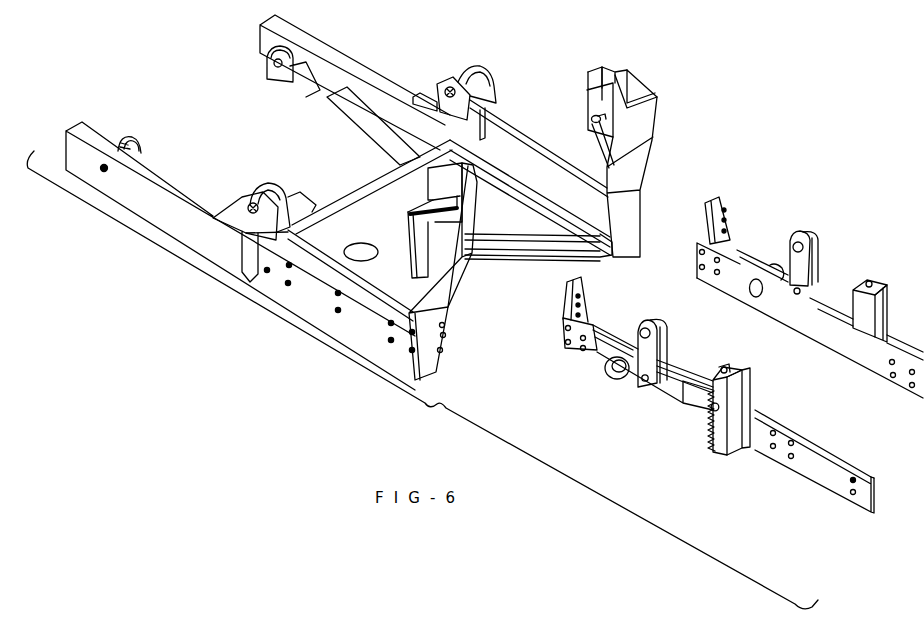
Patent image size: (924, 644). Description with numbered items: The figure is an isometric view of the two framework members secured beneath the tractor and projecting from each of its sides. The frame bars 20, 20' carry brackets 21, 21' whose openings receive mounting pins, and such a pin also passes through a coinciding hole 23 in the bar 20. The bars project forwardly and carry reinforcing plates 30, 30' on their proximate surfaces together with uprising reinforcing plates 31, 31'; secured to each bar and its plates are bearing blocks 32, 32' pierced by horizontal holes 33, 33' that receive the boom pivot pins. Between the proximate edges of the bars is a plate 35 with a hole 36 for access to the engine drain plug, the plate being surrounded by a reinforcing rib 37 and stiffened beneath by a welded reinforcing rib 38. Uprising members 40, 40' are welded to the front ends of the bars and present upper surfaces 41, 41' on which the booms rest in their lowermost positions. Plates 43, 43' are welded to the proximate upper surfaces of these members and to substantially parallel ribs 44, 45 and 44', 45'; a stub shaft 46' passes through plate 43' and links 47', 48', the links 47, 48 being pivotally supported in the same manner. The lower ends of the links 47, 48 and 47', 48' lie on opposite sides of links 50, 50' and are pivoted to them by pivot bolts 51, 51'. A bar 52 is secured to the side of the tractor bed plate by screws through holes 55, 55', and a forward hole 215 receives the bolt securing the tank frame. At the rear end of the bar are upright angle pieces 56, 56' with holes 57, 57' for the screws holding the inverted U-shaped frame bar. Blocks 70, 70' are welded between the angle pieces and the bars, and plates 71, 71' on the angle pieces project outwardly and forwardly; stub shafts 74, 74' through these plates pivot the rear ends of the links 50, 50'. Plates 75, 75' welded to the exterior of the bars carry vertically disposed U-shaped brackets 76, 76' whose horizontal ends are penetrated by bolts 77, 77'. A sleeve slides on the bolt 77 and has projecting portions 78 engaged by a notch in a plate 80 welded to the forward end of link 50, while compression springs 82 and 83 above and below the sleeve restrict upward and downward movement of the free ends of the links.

The frame bar 20 is at (240, 256).
The frame bar 20' is at (355, 82).
The bracket 21 is at (146, 142).
The bracket 21' is at (270, 71).
The hole 23 is at (107, 171).
The reinforcing plate 30 is at (257, 202).
The reinforcing plate 30' is at (366, 126).
The uprising reinforcing plate 31 is at (350, 274).
The uprising reinforcing plate 31' is at (530, 177).
The bearing block 32 is at (284, 201).
The bearing block 32' is at (488, 80).
The hole 33 is at (245, 237).
The hole 33' is at (449, 102).
The plate 35 is at (370, 193).
The hole 36 is at (372, 246).
The reinforcing rib 37 is at (519, 233).
The reinforcing rib 38 is at (537, 258).
The uprising member 40 is at (445, 271).
The uprising member 40' is at (639, 177).
The surface 41 is at (405, 237).
The surface 41' is at (644, 85).
The plate 43 is at (478, 236).
The plate 43' is at (583, 104).
The rib 44 is at (434, 188).
The rib 44' is at (590, 64).
The rib 45 is at (463, 192).
The rib 45' is at (625, 72).
The stub shaft 46' is at (584, 141).
The link 47 is at (637, 346).
The link 47' is at (793, 249).
The link 48 is at (662, 340).
The link 48' is at (820, 248).
The link 50 is at (733, 419).
The link 50' is at (810, 329).
The pivot bolt 51 is at (630, 392).
The pivot bolt 51' is at (819, 277).
The bar 52 is at (835, 457).
The hole 55 is at (776, 453).
The hole 55' is at (886, 379).
The upright angle piece 56 is at (558, 299).
The upright angle piece 56' is at (726, 210).
The hole 57 is at (594, 302).
The hole 57' is at (746, 213).
The block 70 is at (613, 330).
The block 70' is at (762, 252).
The plate 71 is at (577, 348).
The plate 71' is at (740, 253).
The stub shaft 74 is at (604, 379).
The stub shaft 74' is at (745, 300).
The plate 75 is at (755, 411).
The plate 75' is at (856, 315).
The U-shaped bracket 76 is at (727, 423).
The U-shaped bracket 76' is at (886, 302).
The bolt 77 is at (736, 358).
The bolt 77' is at (880, 273).
The outwardly projecting portion 78 is at (709, 410).
The plate 80 is at (690, 376).
The compression spring 82 is at (707, 380).
The compression spring 83 is at (709, 438).
The hole 215 is at (852, 483).